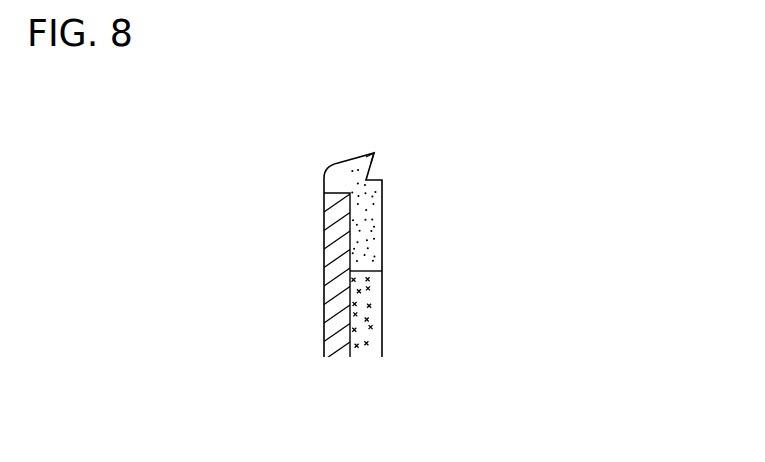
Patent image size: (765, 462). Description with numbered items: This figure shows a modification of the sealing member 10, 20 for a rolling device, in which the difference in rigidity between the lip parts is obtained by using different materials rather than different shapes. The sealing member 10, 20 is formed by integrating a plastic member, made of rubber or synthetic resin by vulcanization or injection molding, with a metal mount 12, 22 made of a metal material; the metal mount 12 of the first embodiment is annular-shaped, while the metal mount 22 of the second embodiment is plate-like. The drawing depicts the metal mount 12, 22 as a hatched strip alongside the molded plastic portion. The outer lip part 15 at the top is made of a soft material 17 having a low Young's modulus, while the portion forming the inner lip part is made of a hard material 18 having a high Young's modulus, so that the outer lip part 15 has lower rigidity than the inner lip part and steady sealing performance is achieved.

The sealing member 10 is at (503, 255).
The sealing member 20 is at (682, 245).
The metal mount 12 is at (276, 276).
The metal mount 22 is at (324, 253).
The outer lip part 15 is at (363, 155).
The soft material 17 is at (375, 209).
The hard material 18 is at (376, 310).